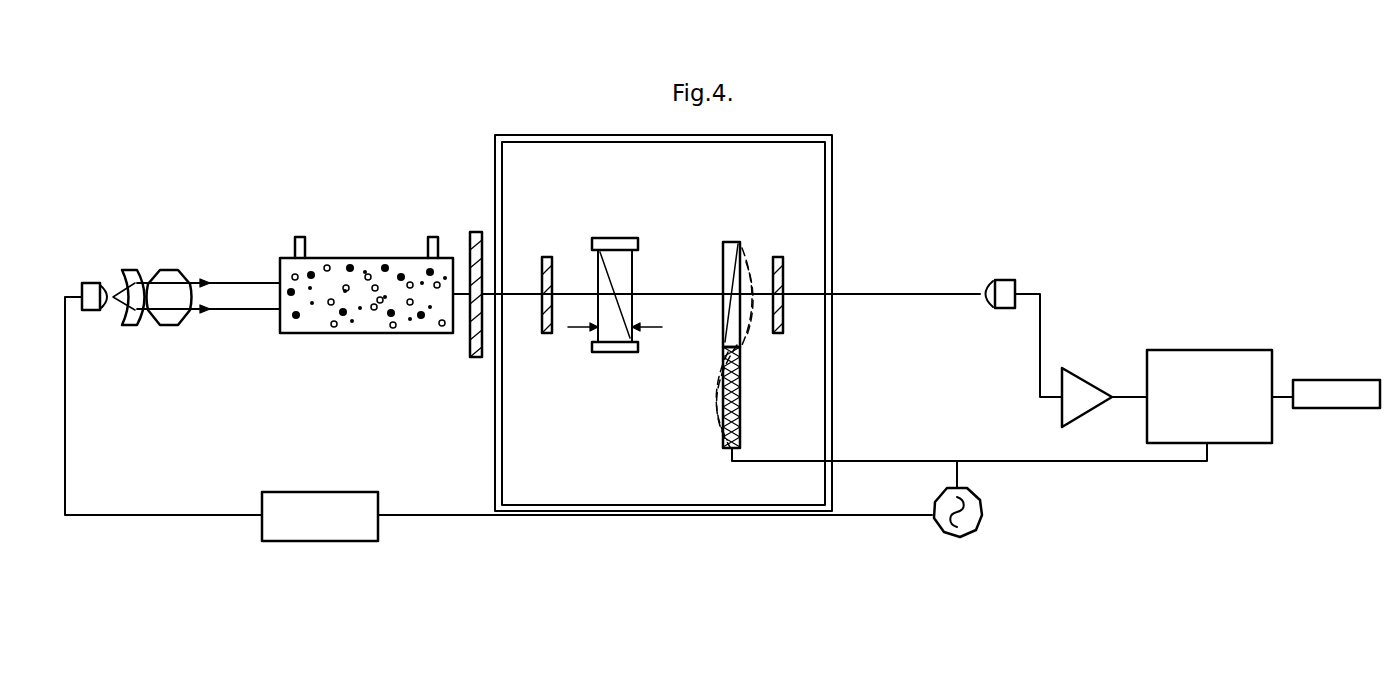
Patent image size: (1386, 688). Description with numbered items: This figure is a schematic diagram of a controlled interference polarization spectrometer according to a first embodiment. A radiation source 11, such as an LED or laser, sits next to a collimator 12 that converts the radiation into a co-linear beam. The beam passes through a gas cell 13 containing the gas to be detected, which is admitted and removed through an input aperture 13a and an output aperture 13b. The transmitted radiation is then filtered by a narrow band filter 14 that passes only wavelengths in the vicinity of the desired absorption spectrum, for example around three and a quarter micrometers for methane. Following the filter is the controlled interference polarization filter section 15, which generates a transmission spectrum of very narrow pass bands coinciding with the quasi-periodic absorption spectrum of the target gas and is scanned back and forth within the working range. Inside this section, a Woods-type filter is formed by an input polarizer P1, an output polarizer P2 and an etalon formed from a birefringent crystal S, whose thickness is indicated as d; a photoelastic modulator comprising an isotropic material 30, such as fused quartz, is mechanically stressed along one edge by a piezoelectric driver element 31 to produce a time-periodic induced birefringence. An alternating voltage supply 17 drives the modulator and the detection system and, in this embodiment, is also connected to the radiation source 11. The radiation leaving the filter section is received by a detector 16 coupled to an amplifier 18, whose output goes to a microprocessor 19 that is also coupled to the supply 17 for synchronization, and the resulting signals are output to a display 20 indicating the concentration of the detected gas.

The radiation source 11 is at (90, 283).
The collimator 12 is at (182, 262).
The gas cell 13 is at (316, 333).
The input aperture 13a is at (300, 232).
The output aperture 13b is at (433, 232).
The narrow band filter 14 is at (468, 346).
The controlled interference polarization filter section 15 is at (832, 256).
The detector 16 is at (1008, 279).
The alternating voltage supply 17 is at (982, 518).
The amplifier 18 is at (1090, 382).
The microprocessor 19 is at (1185, 349).
The display 20 is at (1343, 380).
The isotropic material 30 is at (723, 260).
The piezoelectric driver element 31 is at (741, 402).
The input polarizer P1 is at (548, 335).
The output polarizer P2 is at (780, 335).
The birefringent crystal S is at (602, 236).
The crystal thickness d is at (624, 327).